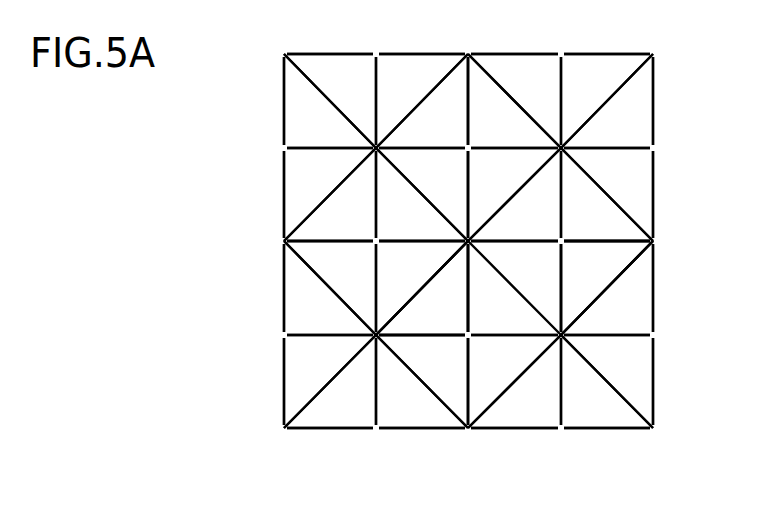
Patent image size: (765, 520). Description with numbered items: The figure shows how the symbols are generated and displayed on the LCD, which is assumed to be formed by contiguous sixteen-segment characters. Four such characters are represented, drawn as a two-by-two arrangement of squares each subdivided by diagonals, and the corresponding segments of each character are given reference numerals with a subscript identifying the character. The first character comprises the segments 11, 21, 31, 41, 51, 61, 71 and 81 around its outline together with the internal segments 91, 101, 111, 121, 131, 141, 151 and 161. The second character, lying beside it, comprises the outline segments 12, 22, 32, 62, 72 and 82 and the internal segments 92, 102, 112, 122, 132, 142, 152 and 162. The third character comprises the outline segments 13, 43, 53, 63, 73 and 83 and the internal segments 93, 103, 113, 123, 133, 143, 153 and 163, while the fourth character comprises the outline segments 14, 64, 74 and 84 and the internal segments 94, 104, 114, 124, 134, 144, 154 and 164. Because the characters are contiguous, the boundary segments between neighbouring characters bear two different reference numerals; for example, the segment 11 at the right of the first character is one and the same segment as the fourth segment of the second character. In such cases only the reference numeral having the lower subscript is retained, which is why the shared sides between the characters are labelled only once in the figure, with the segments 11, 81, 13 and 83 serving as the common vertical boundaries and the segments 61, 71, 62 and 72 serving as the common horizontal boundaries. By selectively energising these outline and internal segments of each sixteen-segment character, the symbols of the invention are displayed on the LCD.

The segment 11 is at (470, 115).
The segment 12 is at (655, 102).
The segment 13 is at (470, 301).
The segment 14 is at (655, 287).
The segment 21 is at (417, 54).
The segment 22 is at (604, 54).
The segment 31 is at (328, 54).
The segment 32 is at (510, 54).
The segment 41 is at (283, 104).
The segment 43 is at (283, 290).
The segment 51 is at (283, 195).
The segment 53 is at (283, 378).
The segment 61 is at (329, 241).
The segment 62 is at (513, 241).
The segment 63 is at (325, 432).
The segment 64 is at (523, 432).
The segment 71 is at (408, 241).
The segment 72 is at (620, 242).
The segment 73 is at (417, 432).
The segment 74 is at (617, 432).
The segment 81 is at (470, 203).
The segment 82 is at (655, 188).
The segment 83 is at (467, 371).
The segment 84 is at (655, 377).
The segment 91 is at (414, 105).
The segment 92 is at (606, 106).
The segment 93 is at (427, 283).
The segment 94 is at (594, 302).
The segment 101 is at (376, 88).
The segment 102 is at (564, 88).
The segment 103 is at (379, 283).
The segment 104 is at (560, 284).
The segment 111 is at (323, 98).
The segment 112 is at (510, 91).
The segment 113 is at (330, 283).
The segment 114 is at (507, 269).
The segment 121 is at (319, 152).
The segment 122 is at (498, 147).
The segment 123 is at (308, 332).
The segment 124 is at (515, 338).
The segment 131 is at (337, 193).
The segment 132 is at (528, 178).
The segment 133 is at (333, 378).
The segment 134 is at (527, 377).
The segment 141 is at (378, 228).
The segment 142 is at (560, 184).
The segment 143 is at (373, 392).
The segment 144 is at (562, 382).
The segment 151 is at (432, 200).
The segment 152 is at (603, 203).
The segment 153 is at (427, 397).
The segment 154 is at (617, 386).
The segment 161 is at (428, 147).
The segment 162 is at (610, 154).
The segment 163 is at (421, 334).
The segment 164 is at (626, 333).